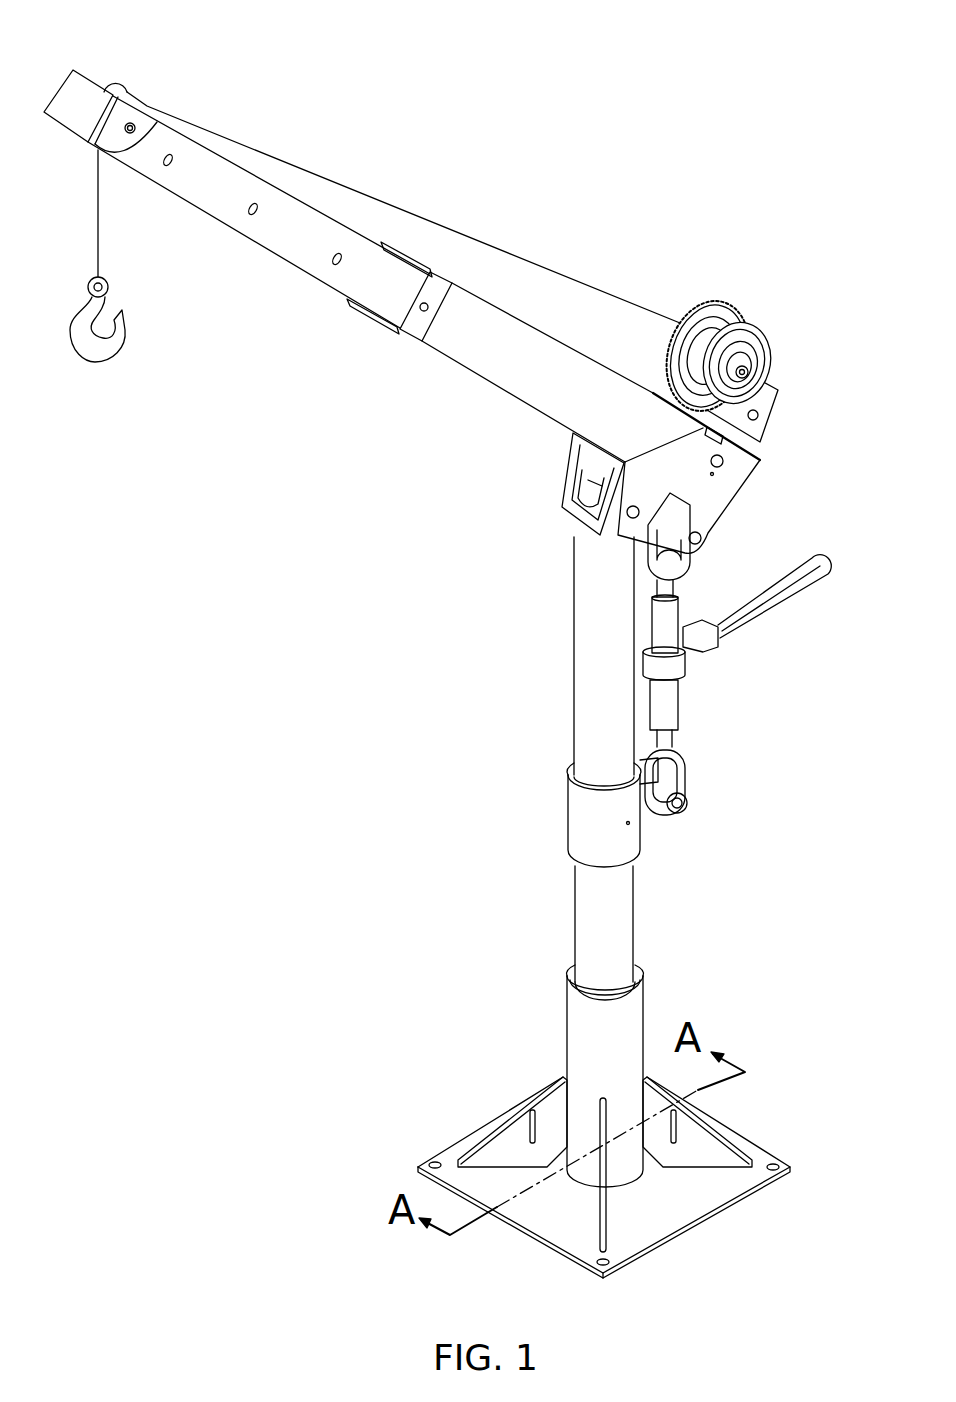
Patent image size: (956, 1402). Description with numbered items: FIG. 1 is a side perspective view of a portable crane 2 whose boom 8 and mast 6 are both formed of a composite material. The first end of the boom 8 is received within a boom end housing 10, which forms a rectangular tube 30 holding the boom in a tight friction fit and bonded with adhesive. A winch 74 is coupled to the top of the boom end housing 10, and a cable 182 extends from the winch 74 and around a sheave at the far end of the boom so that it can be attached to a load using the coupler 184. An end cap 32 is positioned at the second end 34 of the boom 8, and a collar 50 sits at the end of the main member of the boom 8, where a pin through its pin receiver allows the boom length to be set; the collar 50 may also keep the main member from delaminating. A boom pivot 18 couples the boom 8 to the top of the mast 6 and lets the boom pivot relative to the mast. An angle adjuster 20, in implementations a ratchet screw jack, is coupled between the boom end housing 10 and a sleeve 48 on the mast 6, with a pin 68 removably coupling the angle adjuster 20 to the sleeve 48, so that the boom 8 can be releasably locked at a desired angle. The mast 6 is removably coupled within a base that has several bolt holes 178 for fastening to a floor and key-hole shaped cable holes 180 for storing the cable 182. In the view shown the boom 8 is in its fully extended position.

The portable crane 2 is at (783, 110).
The mast 6 is at (574, 653).
The boom 8 is at (480, 297).
The boom end housing 10 is at (648, 455).
The boom pivot 18 is at (560, 506).
The angle adjuster 20 is at (680, 695).
The rectangular tube 30 is at (710, 492).
The end cap 32 is at (148, 108).
The second end 34 is at (130, 172).
The sleeve 48 is at (568, 813).
The collar 50 is at (401, 333).
The pin 68 is at (652, 805).
The winch 74 is at (755, 322).
The bolt holes 178 is at (773, 1162).
The cable holes 180 is at (682, 1125).
The cable 182 is at (613, 293).
The coupler 184 is at (96, 364).